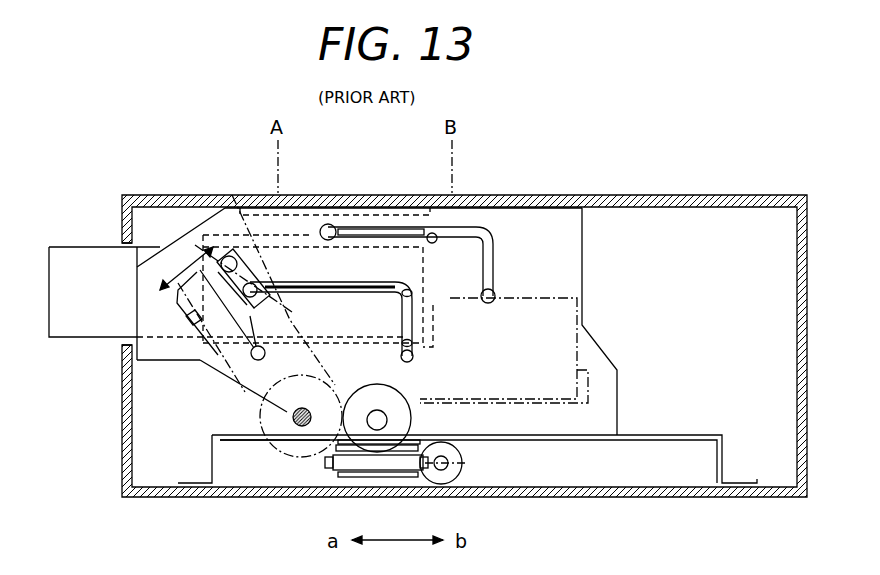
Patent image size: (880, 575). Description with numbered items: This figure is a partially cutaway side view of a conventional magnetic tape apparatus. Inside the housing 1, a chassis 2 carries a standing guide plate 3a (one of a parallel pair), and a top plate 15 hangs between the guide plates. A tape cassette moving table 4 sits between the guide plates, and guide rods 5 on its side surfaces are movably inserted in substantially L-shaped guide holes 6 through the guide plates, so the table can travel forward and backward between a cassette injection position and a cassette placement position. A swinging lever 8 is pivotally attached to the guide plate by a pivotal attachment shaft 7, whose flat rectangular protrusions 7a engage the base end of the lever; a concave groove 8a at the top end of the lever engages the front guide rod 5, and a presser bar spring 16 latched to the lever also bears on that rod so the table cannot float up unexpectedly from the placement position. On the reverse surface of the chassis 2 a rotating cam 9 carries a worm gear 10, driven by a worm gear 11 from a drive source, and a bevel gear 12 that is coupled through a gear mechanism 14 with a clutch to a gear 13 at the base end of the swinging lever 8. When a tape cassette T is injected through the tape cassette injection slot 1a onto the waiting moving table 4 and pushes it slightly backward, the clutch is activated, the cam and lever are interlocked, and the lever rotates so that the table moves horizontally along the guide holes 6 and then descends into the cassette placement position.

The housing 1 is at (650, 195).
The tape cassette injection slot 1a is at (121, 242).
The chassis 2 is at (677, 435).
The guide plate 3a is at (563, 260).
The tape cassette moving table 4 is at (433, 347).
The guide rod 5 is at (333, 237).
The guide hole 6 is at (434, 240).
The pivotal attachment shaft 7 is at (304, 408).
The protrusion 7a is at (285, 415).
The swinging lever 8 is at (234, 392).
The concave groove 8a is at (230, 207).
The rotating cam 9 is at (305, 463).
The worm gear 10 is at (323, 463).
The worm gear 11 is at (462, 465).
The bevel gear 12 is at (423, 437).
The gear 13 is at (340, 373).
The gear mechanism with a clutch 14 is at (405, 392).
The top plate 15 is at (360, 207).
The presser bar spring 16 is at (256, 320).
The tape cassette T is at (72, 338).